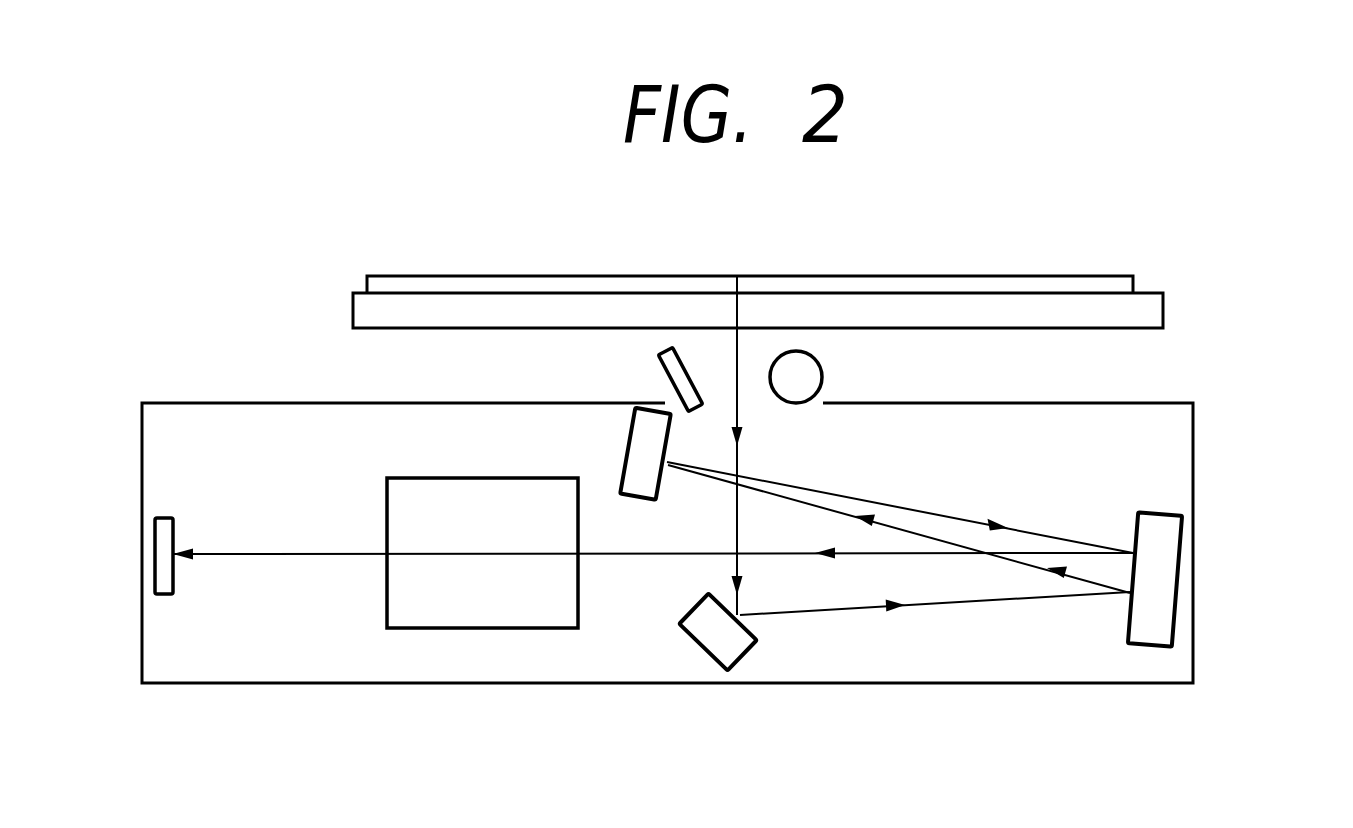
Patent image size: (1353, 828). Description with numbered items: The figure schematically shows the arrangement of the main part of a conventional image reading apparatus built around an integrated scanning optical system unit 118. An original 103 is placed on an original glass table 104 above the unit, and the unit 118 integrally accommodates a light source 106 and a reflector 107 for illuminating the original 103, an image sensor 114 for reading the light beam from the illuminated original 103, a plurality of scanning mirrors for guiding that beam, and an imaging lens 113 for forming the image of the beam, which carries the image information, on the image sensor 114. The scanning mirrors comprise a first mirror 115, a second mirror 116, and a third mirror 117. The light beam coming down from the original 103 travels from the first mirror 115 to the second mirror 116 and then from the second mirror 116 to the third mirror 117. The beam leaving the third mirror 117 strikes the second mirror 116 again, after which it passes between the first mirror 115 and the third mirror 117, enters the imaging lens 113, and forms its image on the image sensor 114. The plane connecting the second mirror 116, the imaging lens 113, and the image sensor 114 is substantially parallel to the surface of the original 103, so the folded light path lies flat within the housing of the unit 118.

The original 103 is at (972, 273).
The original glass table 104 is at (1152, 305).
The light source 106 is at (805, 378).
The reflector 107 is at (673, 372).
The imaging lens 113 is at (442, 508).
The image sensor 114 is at (165, 580).
The first mirror 115 is at (727, 638).
The second mirror 116 is at (1162, 538).
The third mirror 117 is at (638, 472).
The integrated scanning optical system unit 118 is at (1197, 628).